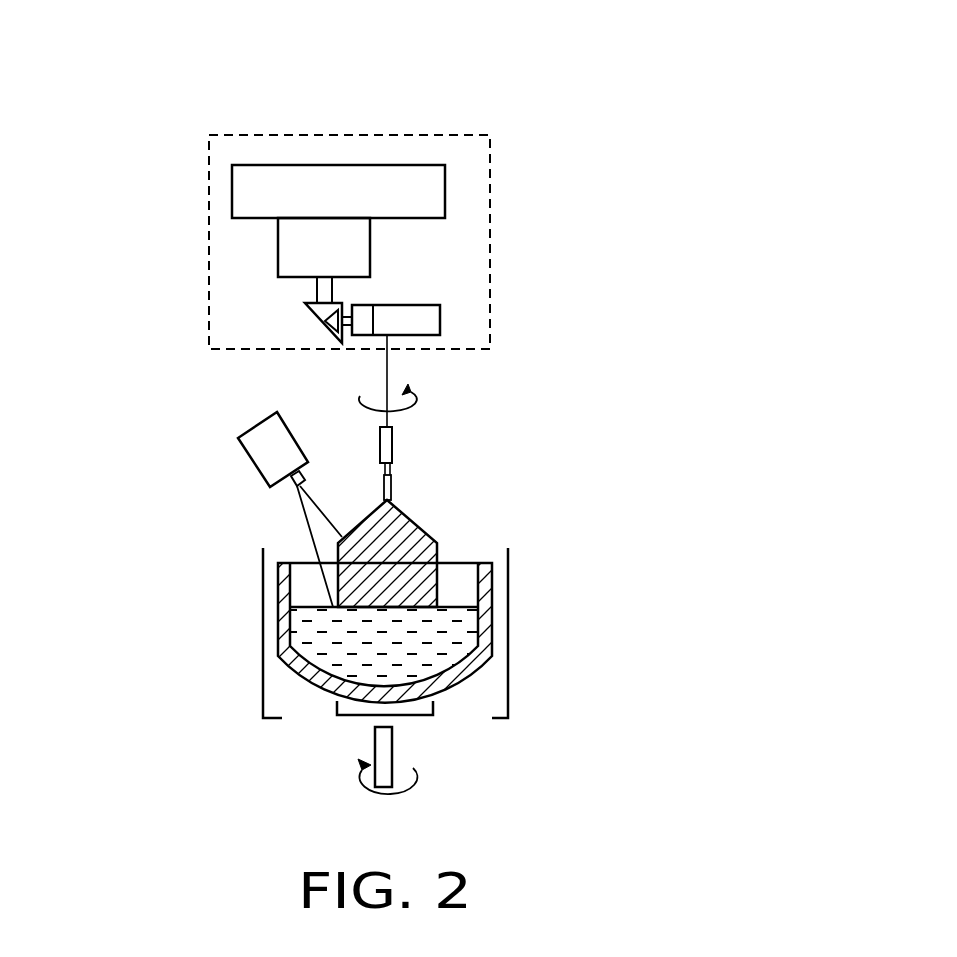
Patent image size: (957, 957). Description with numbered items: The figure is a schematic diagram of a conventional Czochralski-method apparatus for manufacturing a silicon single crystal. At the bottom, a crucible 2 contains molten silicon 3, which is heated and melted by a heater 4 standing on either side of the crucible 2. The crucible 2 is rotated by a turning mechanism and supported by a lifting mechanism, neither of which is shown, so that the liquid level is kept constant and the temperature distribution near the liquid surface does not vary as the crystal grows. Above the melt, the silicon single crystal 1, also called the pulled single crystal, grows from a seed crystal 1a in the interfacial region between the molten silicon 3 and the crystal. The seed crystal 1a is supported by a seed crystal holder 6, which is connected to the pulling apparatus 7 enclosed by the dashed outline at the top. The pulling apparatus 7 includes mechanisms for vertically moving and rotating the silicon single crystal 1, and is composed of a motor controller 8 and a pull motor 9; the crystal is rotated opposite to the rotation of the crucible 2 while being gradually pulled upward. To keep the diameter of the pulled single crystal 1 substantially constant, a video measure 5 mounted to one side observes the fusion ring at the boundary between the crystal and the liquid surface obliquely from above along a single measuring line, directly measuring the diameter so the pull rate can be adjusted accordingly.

The silicon single crystal 1 is at (405, 547).
The seed crystal 1a is at (390, 483).
The crucible 2 is at (483, 583).
The molten silicon 3 is at (455, 652).
The heater 4 is at (508, 688).
The video measure 5 is at (265, 450).
The seed crystal holder 6 is at (395, 447).
The pulling apparatus 7 is at (490, 202).
The motor controller 8 is at (283, 177).
The pull motor 9 is at (330, 232).